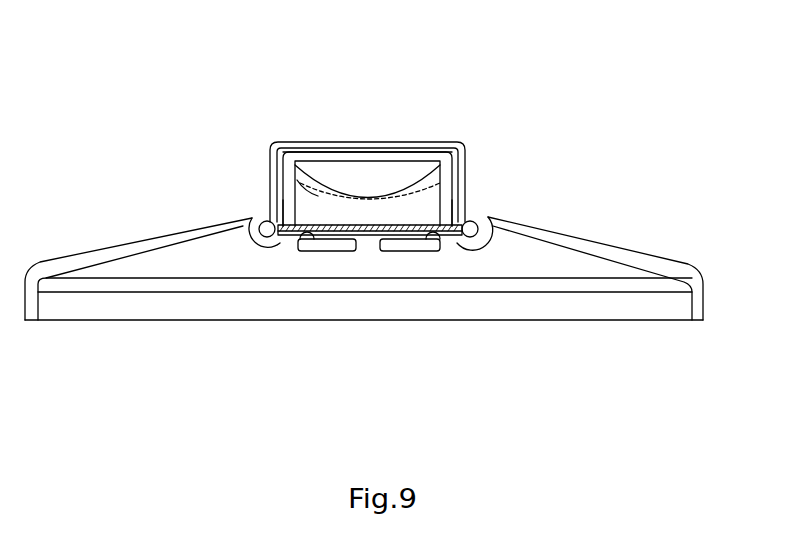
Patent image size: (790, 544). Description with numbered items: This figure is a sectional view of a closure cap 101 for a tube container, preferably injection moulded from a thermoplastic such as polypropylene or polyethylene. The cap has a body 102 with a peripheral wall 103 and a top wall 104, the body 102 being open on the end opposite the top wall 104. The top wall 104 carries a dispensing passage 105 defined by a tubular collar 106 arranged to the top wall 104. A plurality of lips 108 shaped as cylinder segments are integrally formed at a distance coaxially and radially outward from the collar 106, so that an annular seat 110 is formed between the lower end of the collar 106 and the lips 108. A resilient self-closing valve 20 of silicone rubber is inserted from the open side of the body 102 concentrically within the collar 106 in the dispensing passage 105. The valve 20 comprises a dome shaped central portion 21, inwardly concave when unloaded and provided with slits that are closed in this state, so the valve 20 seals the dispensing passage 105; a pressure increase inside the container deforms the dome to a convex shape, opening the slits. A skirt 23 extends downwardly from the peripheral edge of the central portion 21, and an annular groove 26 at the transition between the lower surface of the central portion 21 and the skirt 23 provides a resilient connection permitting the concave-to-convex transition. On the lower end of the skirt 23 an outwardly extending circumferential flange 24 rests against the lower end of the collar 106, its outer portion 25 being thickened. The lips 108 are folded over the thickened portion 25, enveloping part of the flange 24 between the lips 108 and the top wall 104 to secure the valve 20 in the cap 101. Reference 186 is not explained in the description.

The closure cap 101 is at (505, 105).
The body 102 is at (72, 258).
The peripheral wall 103 is at (695, 305).
The top wall 104 is at (568, 243).
The dispensing passage 105 is at (390, 175).
The tubular collar 106 is at (278, 175).
The lips 108 is at (265, 247).
The annular seat 110 is at (468, 210).
The cover 186 is at (288, 143).
The resilient self-closing valve 20 is at (304, 185).
The dome shaped central portion 21 is at (348, 192).
The skirt 23 is at (443, 195).
The circumferential flange 24 is at (285, 225).
The thickened outer portion 25 is at (474, 220).
The annular groove 26 is at (301, 184).